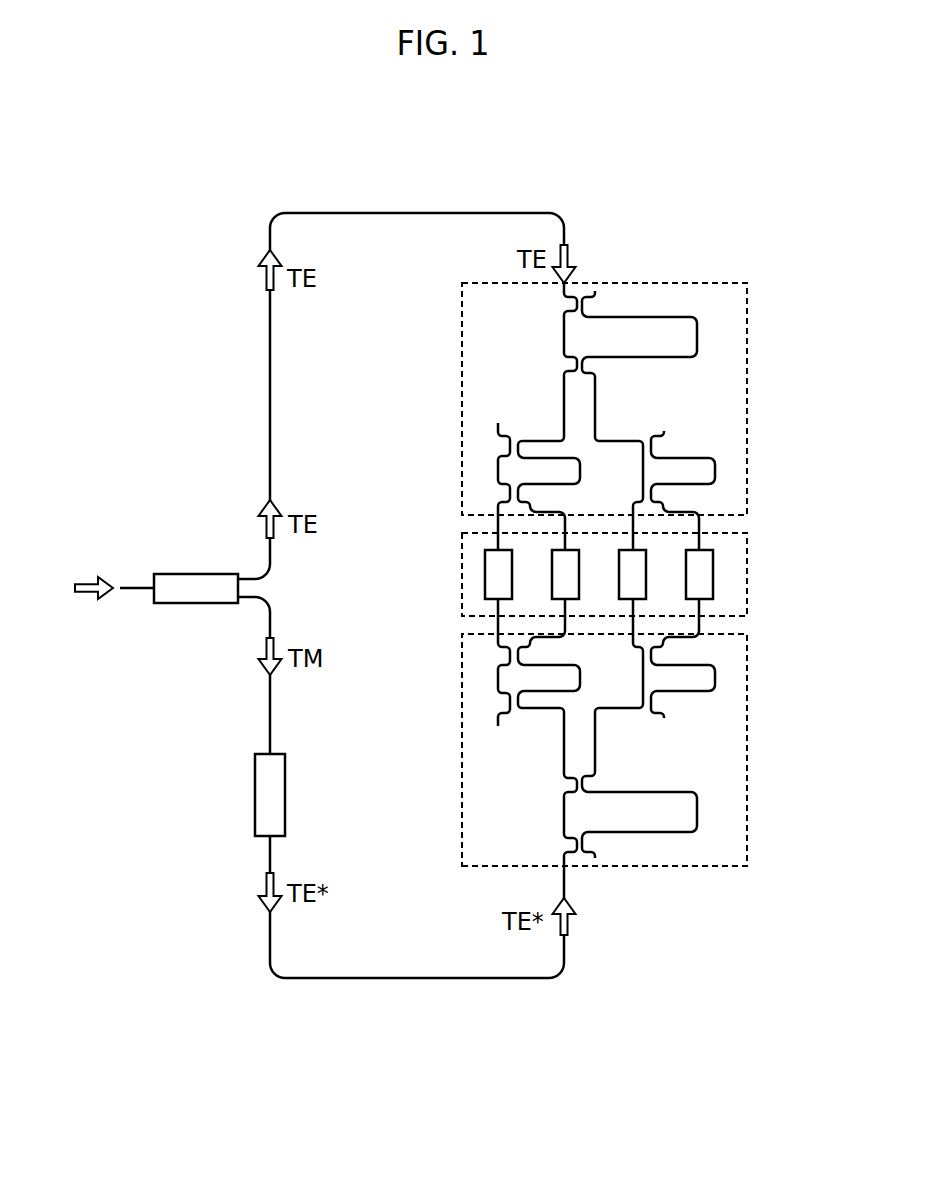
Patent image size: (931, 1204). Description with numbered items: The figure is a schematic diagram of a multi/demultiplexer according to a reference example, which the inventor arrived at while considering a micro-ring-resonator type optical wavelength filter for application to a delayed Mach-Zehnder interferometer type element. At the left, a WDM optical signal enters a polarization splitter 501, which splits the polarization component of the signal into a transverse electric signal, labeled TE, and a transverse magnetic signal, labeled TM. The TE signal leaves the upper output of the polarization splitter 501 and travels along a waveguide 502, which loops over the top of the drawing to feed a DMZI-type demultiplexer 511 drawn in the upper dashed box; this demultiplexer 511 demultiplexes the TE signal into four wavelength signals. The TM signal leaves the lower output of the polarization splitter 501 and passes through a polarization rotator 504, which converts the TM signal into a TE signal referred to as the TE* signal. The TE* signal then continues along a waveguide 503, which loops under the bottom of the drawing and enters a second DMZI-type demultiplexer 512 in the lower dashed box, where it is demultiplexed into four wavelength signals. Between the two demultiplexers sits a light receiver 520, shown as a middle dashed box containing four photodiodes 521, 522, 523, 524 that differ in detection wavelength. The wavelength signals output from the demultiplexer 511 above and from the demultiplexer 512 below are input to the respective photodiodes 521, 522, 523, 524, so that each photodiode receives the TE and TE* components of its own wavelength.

The polarization splitter 501 is at (210, 603).
The waveguide 502 is at (412, 212).
The waveguide 503 is at (415, 978).
The polarization rotator 504 is at (255, 792).
The DMZI-type demultiplexer 511 is at (650, 283).
The DMZI-type demultiplexer 512 is at (650, 866).
The light receiver 520 is at (747, 581).
The photodiode 521 is at (485, 571).
The photodiode 522 is at (552, 592).
The photodiode 523 is at (646, 581).
The photodiode 524 is at (713, 568).